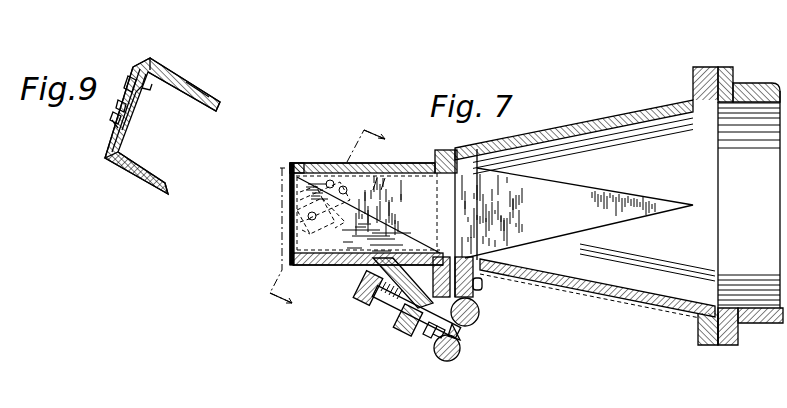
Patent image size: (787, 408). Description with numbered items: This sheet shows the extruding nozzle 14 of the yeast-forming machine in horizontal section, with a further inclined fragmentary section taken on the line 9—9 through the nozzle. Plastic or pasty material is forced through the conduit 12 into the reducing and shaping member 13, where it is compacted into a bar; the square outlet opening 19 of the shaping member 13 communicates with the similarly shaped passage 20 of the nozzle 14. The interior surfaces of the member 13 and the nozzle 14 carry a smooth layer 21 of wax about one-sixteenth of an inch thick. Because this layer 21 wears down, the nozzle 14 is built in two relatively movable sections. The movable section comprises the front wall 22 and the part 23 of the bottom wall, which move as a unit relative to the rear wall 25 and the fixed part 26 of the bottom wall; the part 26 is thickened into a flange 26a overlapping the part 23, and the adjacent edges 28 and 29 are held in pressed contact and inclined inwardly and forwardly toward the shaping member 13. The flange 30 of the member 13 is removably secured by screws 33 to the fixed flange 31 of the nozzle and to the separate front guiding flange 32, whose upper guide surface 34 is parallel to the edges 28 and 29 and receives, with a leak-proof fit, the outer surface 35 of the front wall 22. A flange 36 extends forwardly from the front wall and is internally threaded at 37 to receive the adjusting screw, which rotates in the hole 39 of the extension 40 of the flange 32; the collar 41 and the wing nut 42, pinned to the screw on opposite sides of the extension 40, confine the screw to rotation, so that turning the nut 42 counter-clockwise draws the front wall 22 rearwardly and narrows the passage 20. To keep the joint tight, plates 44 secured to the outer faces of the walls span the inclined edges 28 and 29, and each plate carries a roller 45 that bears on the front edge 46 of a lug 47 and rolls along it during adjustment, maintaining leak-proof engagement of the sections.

In FIG. 7, the section line 9- 9 is at (322, 217).
In FIG. 7, the conduit 12 is at (752, 83).
In FIG. 7, the reducing and shaping member 13 is at (612, 117).
In FIG. 9, the extruding nozzle 14 is at (218, 83).
In FIG. 7, the extruding nozzle 14 is at (331, 157).
In FIG. 7, the outlet opening 19 is at (429, 161).
In FIG. 7, the passage 20 is at (408, 188).
In FIG. 9, the layer of wax 21 is at (190, 100).
In FIG. 9, the front wall 22 is at (128, 182).
In FIG. 7, the front wall 22 is at (342, 265).
In FIG. 9, the part of the bottom wall 23 is at (113, 138).
In FIG. 7, the part of the bottom wall 23 is at (295, 238).
In FIG. 9, the rear wall 25 is at (186, 80).
In FIG. 7, the rear wall 25 is at (370, 163).
In FIG. 9, the fixed part of the bottom wall 26 is at (150, 66).
In FIG. 7, the fixed part of the bottom wall 26 is at (305, 163).
In FIG. 7, the flange 26a is at (297, 183).
In FIG. 9, the edge 28 is at (138, 118).
In FIG. 7, the edge 28 is at (323, 214).
In FIG. 9, the edge 29 is at (148, 90).
In FIG. 7, the edge 29 is at (393, 221).
In FIG. 7, the flange 30 is at (468, 150).
In FIG. 7, the fixed flange 31 is at (455, 144).
In FIG. 7, the front guiding flange 32 is at (480, 308).
In FIG. 7, the screws 33 is at (483, 286).
In FIG. 7, the upper guide surface 34 is at (470, 257).
In FIG. 7, the outer surface 35 is at (403, 283).
In FIG. 7, the flange 36 is at (362, 308).
In FIG. 7, the internal thread 37 is at (360, 293).
In FIG. 7, the hole 39 is at (400, 333).
In FIG. 7, the extension 40 is at (414, 340).
In FIG. 7, the collar 41 is at (396, 320).
In FIG. 7, the wing nut 42 is at (470, 324).
In FIG. 9, the plates 44 is at (130, 74).
In FIG. 7, the plates 44 is at (297, 212).
In FIG. 9, the roller 45 is at (116, 125).
In FIG. 7, the roller 45 is at (297, 235).
In FIG. 7, the front edge 46 is at (297, 200).
In FIG. 9, the lug 47 is at (114, 105).
In FIG. 7, the lug 47 is at (392, 198).